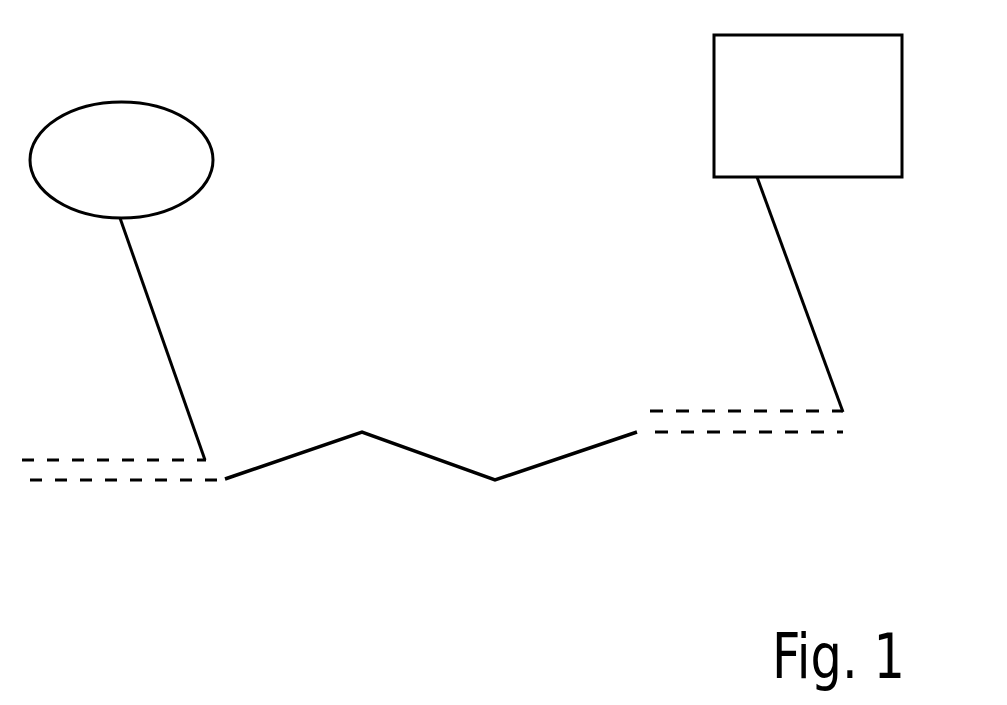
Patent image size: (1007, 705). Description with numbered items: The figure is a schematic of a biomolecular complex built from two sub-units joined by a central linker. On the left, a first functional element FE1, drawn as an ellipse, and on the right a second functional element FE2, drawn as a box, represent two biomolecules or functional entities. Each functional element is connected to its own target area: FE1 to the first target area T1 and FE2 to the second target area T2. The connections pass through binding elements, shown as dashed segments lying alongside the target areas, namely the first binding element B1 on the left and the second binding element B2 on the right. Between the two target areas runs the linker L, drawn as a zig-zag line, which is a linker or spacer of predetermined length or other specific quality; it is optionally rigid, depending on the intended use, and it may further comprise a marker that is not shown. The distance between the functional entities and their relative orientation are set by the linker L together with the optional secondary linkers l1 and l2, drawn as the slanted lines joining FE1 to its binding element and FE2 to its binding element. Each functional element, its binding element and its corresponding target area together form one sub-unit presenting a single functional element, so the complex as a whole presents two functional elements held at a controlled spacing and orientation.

The first functional element FE1 is at (121, 160).
The second functional element FE2 is at (808, 106).
The first secondary linker l1 is at (186, 339).
The second secondary linker l2 is at (843, 294).
The first binding element B1 is at (114, 415).
The second binding element B2 is at (746, 366).
The first target area T1 is at (125, 528).
The second target area T2 is at (749, 480).
The rigid linker L is at (431, 486).